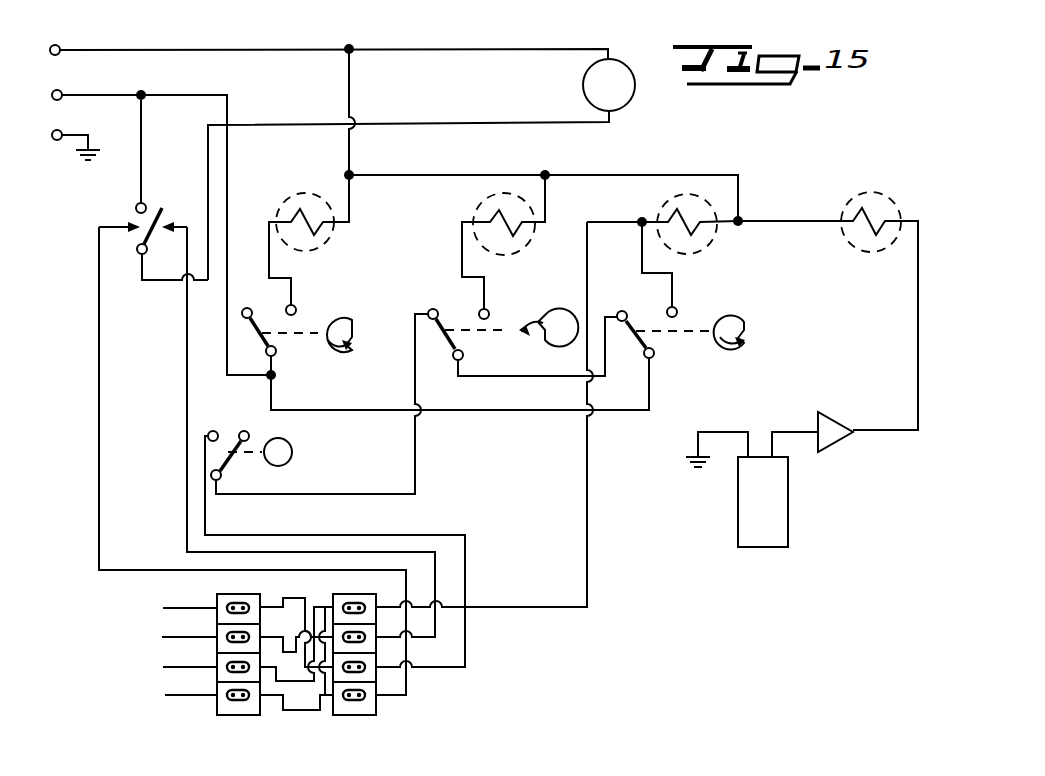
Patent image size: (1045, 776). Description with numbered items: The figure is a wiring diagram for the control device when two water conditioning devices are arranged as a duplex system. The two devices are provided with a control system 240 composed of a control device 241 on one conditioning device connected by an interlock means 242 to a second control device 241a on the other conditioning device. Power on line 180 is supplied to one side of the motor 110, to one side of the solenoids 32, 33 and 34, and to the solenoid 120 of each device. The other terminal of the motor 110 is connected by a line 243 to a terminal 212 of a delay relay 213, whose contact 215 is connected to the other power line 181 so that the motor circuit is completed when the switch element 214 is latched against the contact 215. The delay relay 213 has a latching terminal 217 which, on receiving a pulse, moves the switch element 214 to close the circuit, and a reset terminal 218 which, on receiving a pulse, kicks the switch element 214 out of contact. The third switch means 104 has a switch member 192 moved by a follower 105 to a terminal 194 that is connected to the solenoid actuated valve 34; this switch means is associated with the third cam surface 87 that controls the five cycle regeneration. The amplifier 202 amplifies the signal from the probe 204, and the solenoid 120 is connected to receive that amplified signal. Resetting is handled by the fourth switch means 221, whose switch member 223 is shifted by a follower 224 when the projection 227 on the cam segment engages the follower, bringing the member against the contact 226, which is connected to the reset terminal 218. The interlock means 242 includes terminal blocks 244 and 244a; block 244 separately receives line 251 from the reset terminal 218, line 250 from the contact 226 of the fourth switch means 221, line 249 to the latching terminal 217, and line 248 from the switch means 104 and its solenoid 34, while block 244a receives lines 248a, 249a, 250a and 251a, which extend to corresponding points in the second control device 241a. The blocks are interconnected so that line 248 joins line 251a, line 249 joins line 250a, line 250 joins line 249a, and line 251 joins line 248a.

The power line 180 is at (405, 48).
The power line 181 is at (182, 92).
The line 243 is at (432, 123).
The motor 110 is at (585, 80).
The control device 241 is at (612, 160).
The control system 240 is at (796, 156).
The solenoid 32 is at (325, 178).
The solenoid 33 is at (486, 206).
The solenoid actuated valve 34 is at (672, 193).
The solenoid 120 is at (852, 203).
The delay relay 213 is at (103, 214).
The reset terminal 218 is at (121, 226).
The contact 215 is at (150, 206).
The latching terminal 217 is at (176, 227).
The switch element 214 is at (150, 236).
The terminal 212 is at (140, 255).
The switch member 192 is at (640, 311).
The terminal 194 is at (678, 306).
The third switch means 104 is at (676, 377).
The follower 105 is at (674, 333).
The third cam surface 87 is at (749, 343).
The amplifier 202 is at (838, 428).
The probe 204 is at (774, 508).
The contact 226 is at (215, 431).
The follower 224 is at (246, 456).
The switch member 223 is at (222, 458).
The projection 227 is at (266, 460).
The fourth switch means 221 is at (262, 440).
The line 251 is at (410, 683).
The line 249 is at (188, 496).
The line 250 is at (467, 637).
The line 248 is at (588, 548).
The terminal block 244a is at (226, 715).
The terminal block 244 is at (366, 713).
The interlock means 242 is at (524, 667).
The line 248a is at (206, 607).
The line 249a is at (204, 637).
The line 250a is at (204, 667).
The line 251a is at (204, 695).
The second control device 241a is at (134, 682).